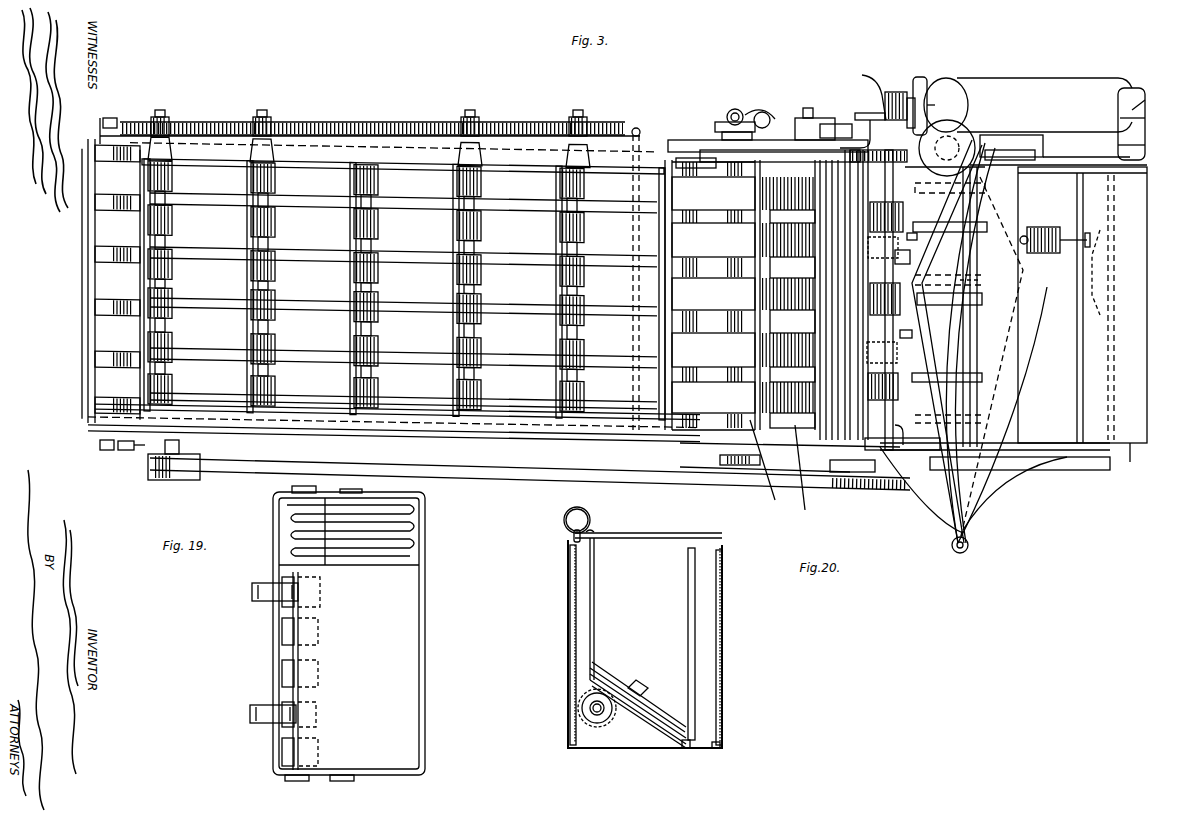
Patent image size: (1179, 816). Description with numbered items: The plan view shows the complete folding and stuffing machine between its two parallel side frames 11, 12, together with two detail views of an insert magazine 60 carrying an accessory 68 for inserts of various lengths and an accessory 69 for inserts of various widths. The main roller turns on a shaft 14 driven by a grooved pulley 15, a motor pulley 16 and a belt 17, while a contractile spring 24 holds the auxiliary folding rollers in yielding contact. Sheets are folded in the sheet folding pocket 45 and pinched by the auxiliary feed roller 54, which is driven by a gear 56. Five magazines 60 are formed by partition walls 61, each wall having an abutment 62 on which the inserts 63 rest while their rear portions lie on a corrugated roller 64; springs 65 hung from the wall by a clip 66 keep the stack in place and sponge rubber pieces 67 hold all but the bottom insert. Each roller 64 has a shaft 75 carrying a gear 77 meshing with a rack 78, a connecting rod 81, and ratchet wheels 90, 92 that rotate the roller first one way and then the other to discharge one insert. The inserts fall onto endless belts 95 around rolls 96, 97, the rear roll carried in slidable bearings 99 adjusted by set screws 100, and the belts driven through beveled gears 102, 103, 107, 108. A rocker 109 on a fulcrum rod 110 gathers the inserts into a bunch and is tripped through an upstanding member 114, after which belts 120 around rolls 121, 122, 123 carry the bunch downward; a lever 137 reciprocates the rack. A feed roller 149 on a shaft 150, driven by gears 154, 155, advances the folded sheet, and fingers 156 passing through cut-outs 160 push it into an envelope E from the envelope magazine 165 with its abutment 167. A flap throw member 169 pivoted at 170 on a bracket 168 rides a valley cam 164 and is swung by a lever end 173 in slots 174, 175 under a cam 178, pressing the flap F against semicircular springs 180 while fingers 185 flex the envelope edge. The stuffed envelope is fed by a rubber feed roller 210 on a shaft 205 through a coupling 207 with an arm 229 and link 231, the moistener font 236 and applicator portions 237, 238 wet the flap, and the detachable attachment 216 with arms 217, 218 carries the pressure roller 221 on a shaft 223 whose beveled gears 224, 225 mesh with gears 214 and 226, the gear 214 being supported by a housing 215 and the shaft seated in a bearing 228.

In FIG. 3, the side frame 11 is at (490, 424).
In FIG. 3, the side frame 12 is at (522, 146).
In FIG. 3, the shaft 14 is at (806, 108).
In FIG. 3, the grooved pulley 15 is at (705, 480).
In FIG. 3, the grooved pulley 16 is at (158, 472).
In FIG. 3, the belt 17 is at (522, 470).
In FIG. 3, the contractile spring 24 is at (742, 466).
In FIG. 3, the sheet folding pocket 45 is at (830, 410).
In FIG. 3, the auxiliary feed roller 54 is at (880, 185).
In FIG. 3, the gear 56 is at (862, 145).
In FIG. 3, the magazine 60 is at (313, 155).
In FIG. 19, the magazine 60 is at (422, 705).
In FIG. 20, the magazine 60 is at (726, 698).
In FIG. 3, the partition wall 61 is at (143, 280).
In FIG. 20, the partition wall 61 is at (568, 606).
In FIG. 20, the abutment 62 is at (685, 749).
In FIG. 20, the insert 63 is at (612, 676).
In FIG. 3, the roller 64 is at (172, 270).
In FIG. 19, the roller 64 is at (282, 633).
In FIG. 20, the roller 64 is at (598, 728).
In FIG. 19, the spring 65 is at (250, 585).
In FIG. 20, the spring 65 is at (596, 582).
In FIG. 20, the clip 66 is at (584, 524).
In FIG. 3, the sponge rubber piece 67 is at (504, 165).
In FIG. 20, the sponge rubber piece 67 is at (640, 690).
In FIG. 19, the accessory 68 is at (418, 545).
In FIG. 20, the accessory 69 is at (688, 606).
In FIG. 3, the shaft 75 is at (264, 116).
In FIG. 19, the shaft 75 is at (290, 654).
In FIG. 20, the shaft 75 is at (582, 708).
In FIG. 3, the gear 77 is at (168, 120).
In FIG. 3, the rack 78 is at (420, 128).
In FIG. 3, the connecting rod 81 is at (598, 130).
In FIG. 3, the ratchet wheel 90 is at (272, 124).
In FIG. 3, the ratchet wheel 92 is at (257, 118).
In FIG. 3, the endless belt 95 is at (86, 320).
In FIG. 3, the roll 96 is at (706, 150).
In FIG. 3, the roll 97 is at (88, 253).
In FIG. 3, the slidable bearing 99 is at (108, 118).
In FIG. 3, the set screw 100 is at (126, 450).
In FIG. 3, the beveled gear 102 is at (728, 112).
In FIG. 3, the beveled gear 103 is at (738, 120).
In FIG. 3, the beveled gear 107 is at (752, 132).
In FIG. 3, the beveled gear 108 is at (766, 112).
In FIG. 3, the rocker 109 is at (622, 209).
In FIG. 3, the fulcrum rod 110 is at (636, 430).
In FIG. 3, the upstanding member 114 is at (637, 128).
In FIG. 3, the belt 120 is at (708, 233).
In FIG. 3, the roll 121 is at (684, 158).
In FIG. 3, the roll 122 is at (769, 471).
In FIG. 3, the roll 123 is at (810, 479).
In FIG. 3, the lever 137 is at (822, 124).
In FIG. 3, the feed roller 149 is at (945, 307).
In FIG. 3, the shaft 150 is at (902, 437).
In FIG. 3, the gear 154 is at (865, 88).
In FIG. 3, the gear 155 is at (894, 150).
In FIG. 3, the finger 156 is at (935, 336).
In FIG. 3, the cut-out 160 is at (912, 232).
In FIG. 3, the valley cam 164 is at (1020, 448).
In FIG. 3, the envelope magazine 165 is at (1130, 464).
In FIG. 3, the abutment 167 is at (1077, 373).
In FIG. 3, the bracket 168 is at (945, 490).
In FIG. 3, the flap throw member 169 is at (1030, 350).
In FIG. 3, the pivot 170 is at (956, 552).
In FIG. 3, the upper lever end 173 is at (940, 470).
In FIG. 3, the slot 174 is at (975, 478).
In FIG. 3, the longitudinal slot 175 is at (970, 500).
In FIG. 3, the cam 178 is at (840, 472).
In FIG. 3, the semicircular spring 180 is at (955, 232).
In FIG. 3, the finger 185 is at (982, 285).
In FIG. 3, the shaft 205 is at (1114, 395).
In FIG. 3, the coupling 207 is at (1116, 278).
In FIG. 3, the rubber feed roller 210 is at (1042, 228).
In FIG. 3, the beveled gear 214 is at (1140, 140).
In FIG. 3, the housing 215 is at (1147, 200).
In FIG. 3, the attachment 216 is at (1126, 88).
In FIG. 3, the arm 217 is at (1140, 113).
In FIG. 3, the arm 218 is at (940, 80).
In FIG. 3, the pressure roller 221 is at (1050, 95).
In FIG. 3, the shaft 223 is at (948, 105).
In FIG. 3, the beveled gear 224 is at (1142, 104).
In FIG. 3, the beveled gear 225 is at (895, 92).
In FIG. 3, the beveled gear 226 is at (868, 113).
In FIG. 3, the bearing 228 is at (914, 98).
In FIG. 3, the arm 229 is at (1082, 470).
In FIG. 3, the link 231 is at (1020, 473).
In FIG. 3, the font 236 is at (965, 132).
In FIG. 3, the applicator portion 237 is at (1008, 135).
In FIG. 3, the applicator portion 238 is at (1030, 160).
In FIG. 3, the envelope E is at (1047, 396).
In FIG. 3, the flap F is at (991, 262).